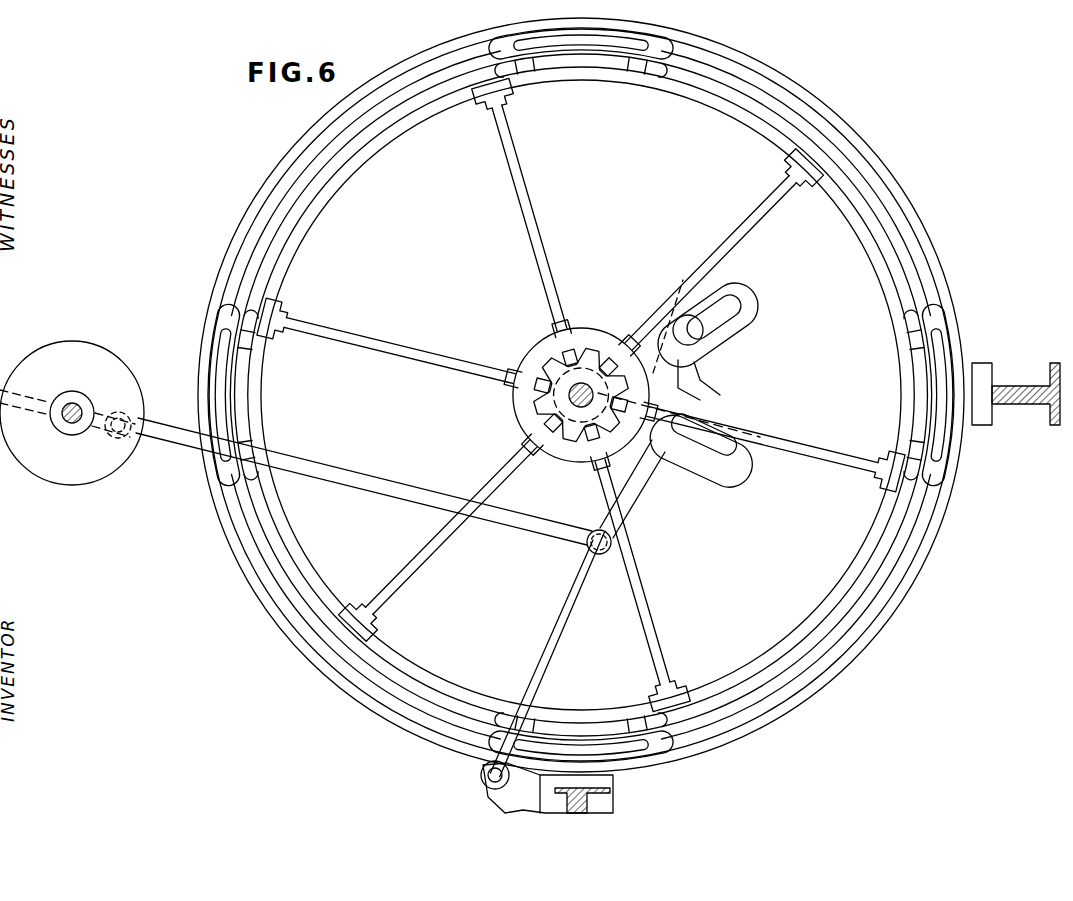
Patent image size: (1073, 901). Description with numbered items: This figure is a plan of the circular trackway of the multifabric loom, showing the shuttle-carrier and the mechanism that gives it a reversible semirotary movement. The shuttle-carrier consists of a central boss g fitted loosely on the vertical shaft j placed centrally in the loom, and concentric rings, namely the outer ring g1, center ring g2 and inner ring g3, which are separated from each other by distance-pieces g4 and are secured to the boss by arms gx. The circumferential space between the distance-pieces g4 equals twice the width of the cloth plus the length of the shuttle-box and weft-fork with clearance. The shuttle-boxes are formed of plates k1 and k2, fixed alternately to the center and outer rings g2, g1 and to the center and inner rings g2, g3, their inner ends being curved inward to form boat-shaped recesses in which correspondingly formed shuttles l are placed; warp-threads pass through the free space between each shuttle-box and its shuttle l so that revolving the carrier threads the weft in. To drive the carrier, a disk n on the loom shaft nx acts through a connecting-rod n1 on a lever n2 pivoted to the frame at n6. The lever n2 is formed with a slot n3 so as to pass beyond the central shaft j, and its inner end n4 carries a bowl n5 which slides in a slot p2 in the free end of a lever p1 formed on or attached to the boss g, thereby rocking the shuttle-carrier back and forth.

The outer ring g1 is at (220, 277).
The center ring g2 is at (275, 217).
The inner ring g3 is at (303, 243).
The distance-pieces g4 is at (642, 67).
The arms gx is at (548, 240).
The central boss g is at (535, 418).
The vertical shaft j is at (570, 395).
The shuttle-box plate k1 is at (500, 35).
The shuttle-box plate k2 is at (560, 62).
The shuttle l is at (662, 43).
The disk n is at (52, 478).
The shaft nx is at (74, 405).
The connecting-rod n1 is at (395, 484).
The lever n2 is at (556, 610).
The slot n3 is at (698, 466).
The inner end n4 is at (688, 374).
The bowl n5 is at (672, 325).
The pivot n6 is at (482, 780).
The lever p1 is at (692, 374).
The slot p2 is at (725, 325).